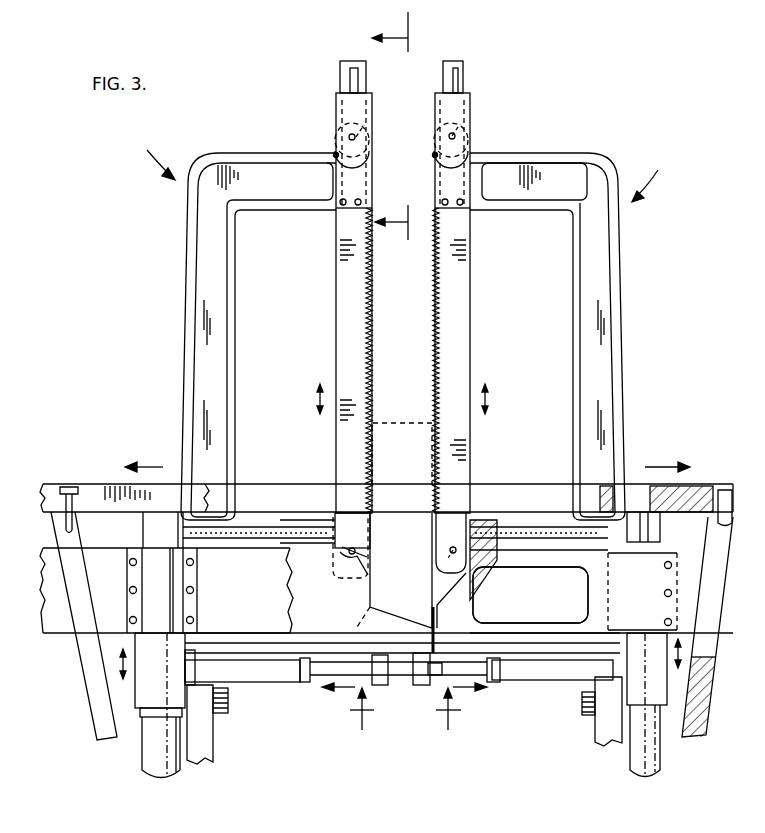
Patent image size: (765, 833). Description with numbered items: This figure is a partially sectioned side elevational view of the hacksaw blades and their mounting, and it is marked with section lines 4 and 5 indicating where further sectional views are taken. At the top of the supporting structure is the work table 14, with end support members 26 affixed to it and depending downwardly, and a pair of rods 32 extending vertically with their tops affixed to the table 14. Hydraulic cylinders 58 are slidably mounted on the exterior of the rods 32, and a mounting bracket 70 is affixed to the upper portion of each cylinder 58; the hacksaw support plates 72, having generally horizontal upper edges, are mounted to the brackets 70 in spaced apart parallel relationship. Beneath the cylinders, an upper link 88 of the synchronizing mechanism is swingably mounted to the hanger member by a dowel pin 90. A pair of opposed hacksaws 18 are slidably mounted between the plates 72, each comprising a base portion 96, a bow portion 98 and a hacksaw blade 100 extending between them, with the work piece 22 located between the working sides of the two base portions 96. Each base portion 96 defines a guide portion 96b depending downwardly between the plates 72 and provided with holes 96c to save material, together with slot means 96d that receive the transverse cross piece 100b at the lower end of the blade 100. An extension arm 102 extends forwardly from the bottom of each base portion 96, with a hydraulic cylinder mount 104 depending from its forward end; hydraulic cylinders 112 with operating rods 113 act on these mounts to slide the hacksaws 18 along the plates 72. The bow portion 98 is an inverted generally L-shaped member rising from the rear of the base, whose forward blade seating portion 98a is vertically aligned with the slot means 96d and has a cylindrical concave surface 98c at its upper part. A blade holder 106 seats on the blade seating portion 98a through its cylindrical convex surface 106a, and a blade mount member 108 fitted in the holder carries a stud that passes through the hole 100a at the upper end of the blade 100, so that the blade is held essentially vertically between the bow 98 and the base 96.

The section line 4— 4 is at (406, 712).
The section line 5— 5 is at (390, 126).
The work table 14 is at (82, 483).
The hacksaw 18 is at (400, 165).
The work piece 22 is at (400, 423).
The end support member 26 is at (87, 710).
The rod 32 is at (174, 539).
The hydraulic cylinder 58 is at (170, 678).
The mounting bracket 70 is at (200, 600).
The hacksaw support plate 72 is at (90, 483).
The upper link 88 is at (213, 745).
The dowel pin 90 is at (228, 700).
The base portion 96 is at (340, 500).
The guide portion 96b is at (600, 628).
The hole 96c is at (482, 615).
The slot means 96d is at (440, 548).
The bow portion 98 is at (188, 336).
The blade seating portion 98a is at (342, 192).
The cylindrical concave surface 98c is at (436, 160).
The hacksaw blade 100 is at (336, 286).
The hole 100a is at (470, 108).
The transverse cross piece 100b is at (342, 547).
The extension arm 102 is at (402, 612).
The hydraulic cylinder mount 104 is at (382, 685).
The blade holder 106 is at (336, 104).
The cylindrical convex surface 106a is at (362, 148).
The blade mount member 108 is at (349, 137).
The hydraulic cylinder 112 is at (317, 688).
The operating rod 113 is at (415, 683).